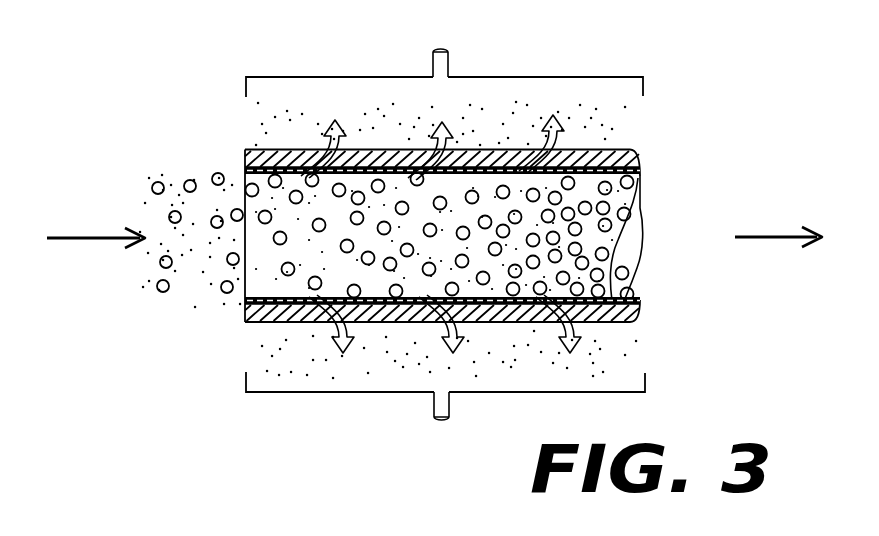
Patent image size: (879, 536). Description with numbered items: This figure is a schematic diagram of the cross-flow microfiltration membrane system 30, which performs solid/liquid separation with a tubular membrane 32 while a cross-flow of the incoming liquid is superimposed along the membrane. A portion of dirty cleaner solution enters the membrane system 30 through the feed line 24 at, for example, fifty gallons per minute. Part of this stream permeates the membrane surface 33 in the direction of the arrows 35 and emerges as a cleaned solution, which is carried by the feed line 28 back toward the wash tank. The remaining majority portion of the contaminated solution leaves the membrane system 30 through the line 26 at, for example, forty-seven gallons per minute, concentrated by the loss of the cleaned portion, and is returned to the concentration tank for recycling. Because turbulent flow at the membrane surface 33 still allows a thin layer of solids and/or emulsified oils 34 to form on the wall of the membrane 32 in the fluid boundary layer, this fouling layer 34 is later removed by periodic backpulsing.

The feed line 24 is at (98, 236).
The line 26 is at (762, 234).
The feed line 28 is at (445, 239).
The microfiltration membrane system 30 is at (271, 328).
The porous support wall 32 is at (610, 158).
The membrane surface 33 is at (582, 167).
The layer of solids and/or emulsified oils 34 is at (640, 171).
The arrows 35 is at (540, 118).